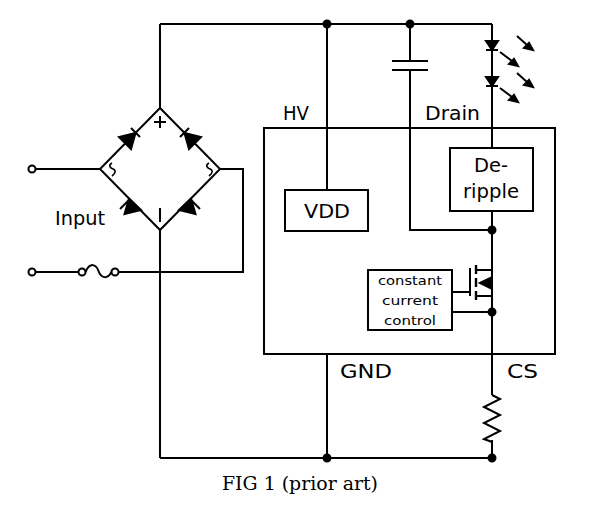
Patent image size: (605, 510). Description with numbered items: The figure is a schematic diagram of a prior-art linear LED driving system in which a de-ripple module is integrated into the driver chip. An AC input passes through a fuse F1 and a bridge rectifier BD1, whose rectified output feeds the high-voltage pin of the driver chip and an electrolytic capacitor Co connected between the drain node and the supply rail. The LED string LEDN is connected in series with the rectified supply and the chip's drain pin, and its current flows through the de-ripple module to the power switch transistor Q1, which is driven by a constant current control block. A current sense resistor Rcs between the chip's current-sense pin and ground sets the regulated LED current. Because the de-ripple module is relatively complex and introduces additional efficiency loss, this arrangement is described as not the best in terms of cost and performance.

The bridge rectifier BD1 is at (160, 169).
The fuse F1 is at (99, 289).
The electrolytic capacitor Co is at (442, 127).
The LED string LEDN is at (527, 86).
The first power switch transistor Q1 is at (494, 288).
The current sense resistor Rcs is at (519, 418).